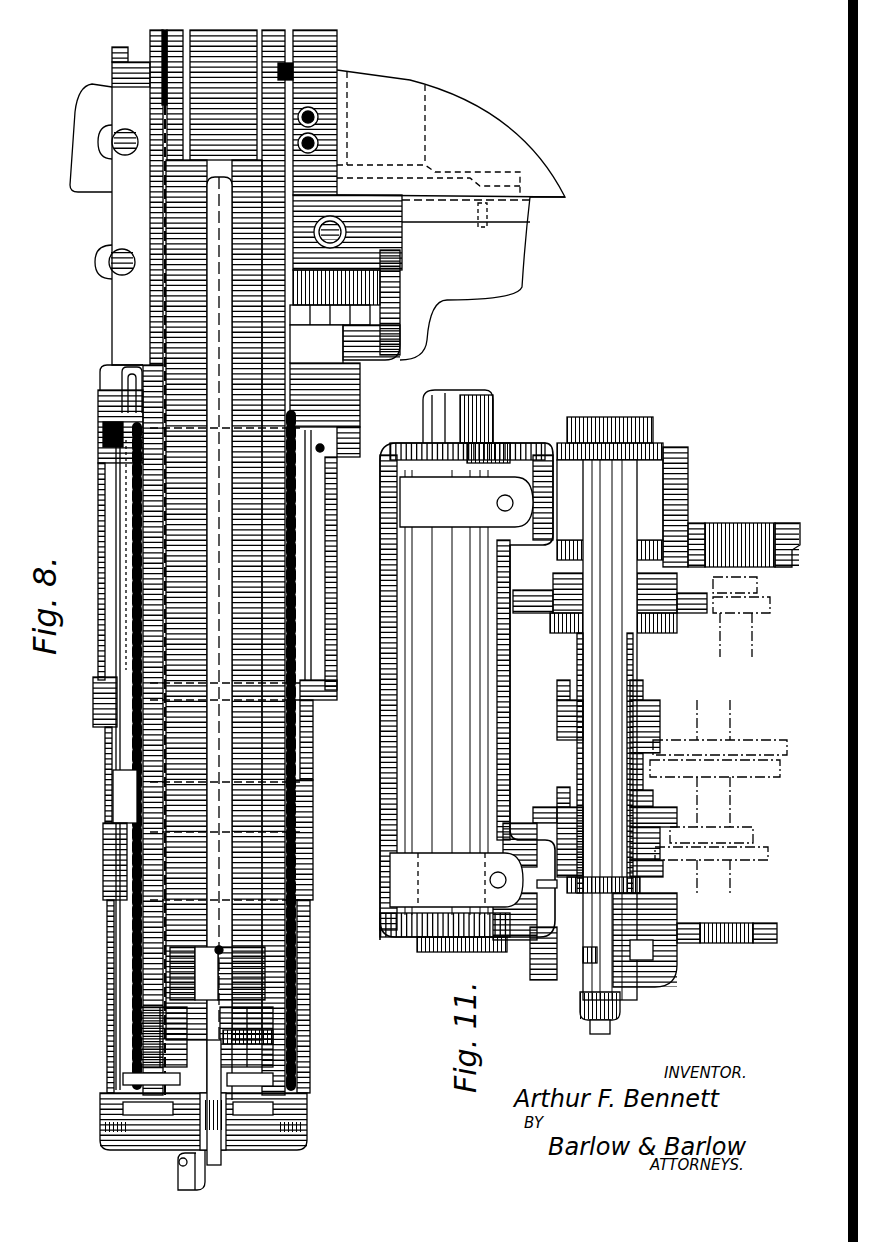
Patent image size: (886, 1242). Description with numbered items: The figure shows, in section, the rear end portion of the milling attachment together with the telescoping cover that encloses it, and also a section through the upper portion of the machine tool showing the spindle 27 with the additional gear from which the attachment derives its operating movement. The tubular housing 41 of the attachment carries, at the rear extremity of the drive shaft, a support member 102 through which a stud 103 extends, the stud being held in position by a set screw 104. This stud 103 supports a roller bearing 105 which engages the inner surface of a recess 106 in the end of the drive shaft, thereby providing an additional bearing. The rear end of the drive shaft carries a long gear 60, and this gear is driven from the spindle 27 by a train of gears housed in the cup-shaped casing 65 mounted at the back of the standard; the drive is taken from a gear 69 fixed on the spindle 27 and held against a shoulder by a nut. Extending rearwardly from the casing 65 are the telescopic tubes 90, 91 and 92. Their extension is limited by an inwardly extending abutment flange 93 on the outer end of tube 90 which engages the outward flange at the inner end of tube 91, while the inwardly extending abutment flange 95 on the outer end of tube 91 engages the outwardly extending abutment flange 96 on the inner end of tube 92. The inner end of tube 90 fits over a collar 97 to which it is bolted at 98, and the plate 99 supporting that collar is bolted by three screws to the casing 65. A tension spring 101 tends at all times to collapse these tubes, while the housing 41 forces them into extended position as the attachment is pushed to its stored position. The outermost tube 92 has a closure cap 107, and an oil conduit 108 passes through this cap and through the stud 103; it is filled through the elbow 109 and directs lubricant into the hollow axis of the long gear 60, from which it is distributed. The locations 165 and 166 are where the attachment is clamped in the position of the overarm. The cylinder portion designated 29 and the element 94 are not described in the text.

In FIG. 11, the spindle 27 is at (618, 420).
In FIG. 11, the cylinder 29 is at (430, 743).
In FIG. 8, the housing 41 is at (143, 335).
In FIG. 8, the long gear 60 is at (250, 798).
In FIG. 8, the casing 65 is at (387, 365).
In FIG. 11, the gear 69 is at (587, 997).
In FIG. 8, the telescopic tube 90 is at (104, 535).
In FIG. 8, the telescopic tube 91 is at (112, 795).
In FIG. 8, the telescopic tube 92 is at (108, 940).
In FIG. 8, the abutment flange 93 is at (95, 700).
In FIG. 8, the guide rod 94 is at (97, 668).
In FIG. 8, the abutment flange 95 is at (103, 850).
In FIG. 8, the abutment flange 96 is at (105, 760).
In FIG. 8, the collar 97 is at (103, 480).
In FIG. 8, the bolts 98 is at (113, 440).
In FIG. 8, the plate 99 is at (339, 366).
In FIG. 8, the tension spring 101 is at (106, 1000).
In FIG. 8, the support member 102 is at (285, 1036).
In FIG. 8, the stud 103 is at (275, 1000).
In FIG. 8, the set screw 104 is at (295, 1082).
In FIG. 8, the roller bearing 105 is at (235, 990).
In FIG. 8, the recess 106 is at (225, 950).
In FIG. 8, the closure cap 107 is at (265, 1140).
In FIG. 8, the oil conduit 108 is at (215, 1120).
In FIG. 8, the elbow 109 is at (179, 1168).
In FIG. 11, the clamping position 165 is at (420, 938).
In FIG. 11, the clamping position 166 is at (407, 523).